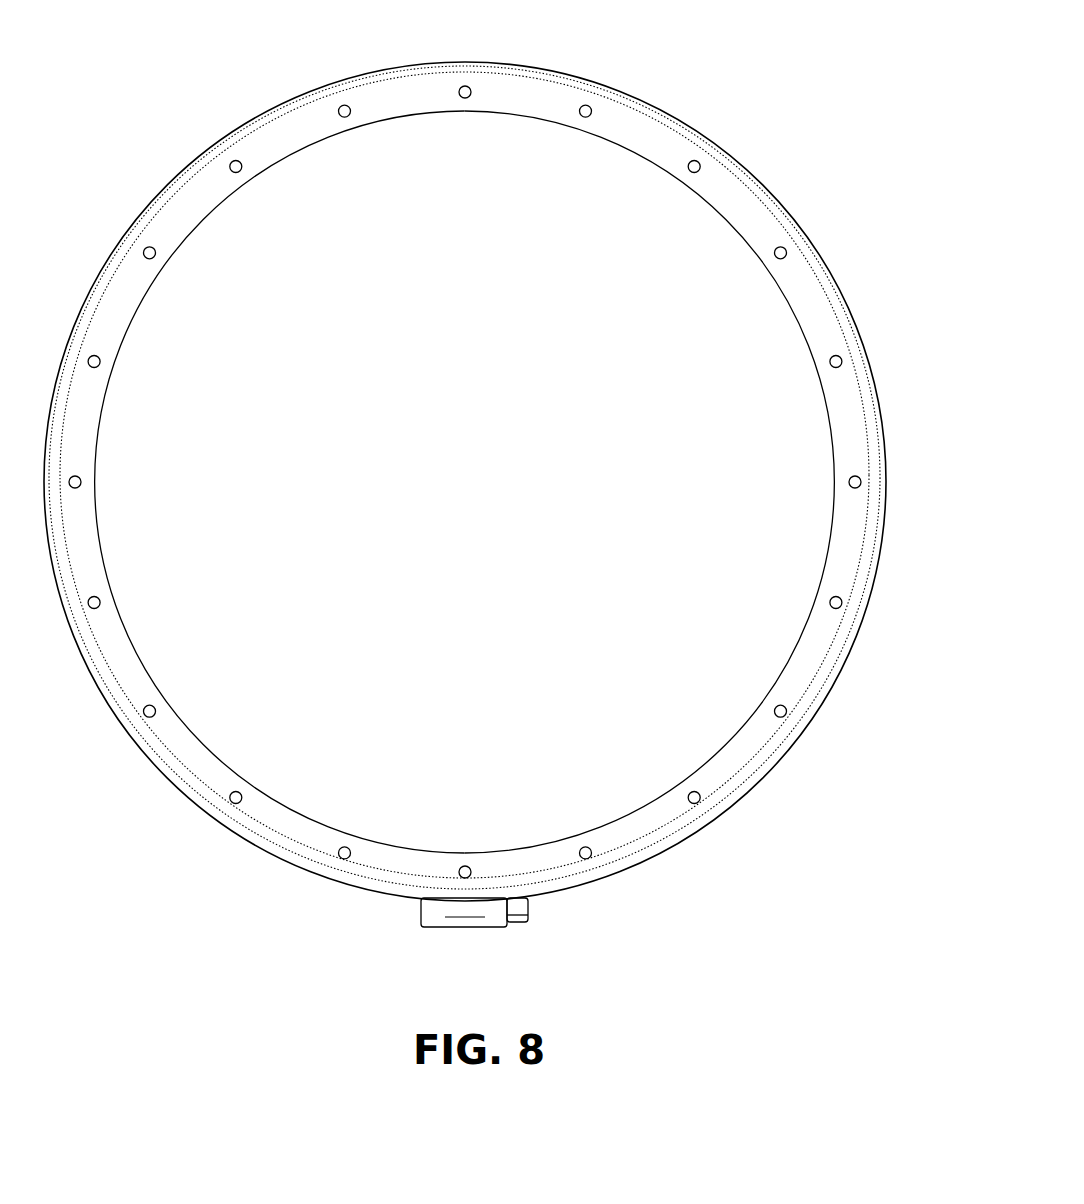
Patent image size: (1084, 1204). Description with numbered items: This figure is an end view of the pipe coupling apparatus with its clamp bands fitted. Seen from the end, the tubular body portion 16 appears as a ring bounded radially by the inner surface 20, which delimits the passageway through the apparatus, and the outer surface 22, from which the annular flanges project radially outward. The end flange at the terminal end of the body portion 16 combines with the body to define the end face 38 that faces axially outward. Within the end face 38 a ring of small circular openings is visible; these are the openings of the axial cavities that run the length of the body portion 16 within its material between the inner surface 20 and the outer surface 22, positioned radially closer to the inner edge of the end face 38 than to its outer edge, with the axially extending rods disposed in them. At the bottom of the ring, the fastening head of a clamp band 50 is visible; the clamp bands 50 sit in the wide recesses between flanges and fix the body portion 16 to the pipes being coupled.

The end face 38 is at (523, 97).
The outer surface 22 is at (752, 183).
The inner surface 20 is at (792, 298).
The tubular body portion 16 is at (290, 140).
The clamp band 50 is at (488, 908).